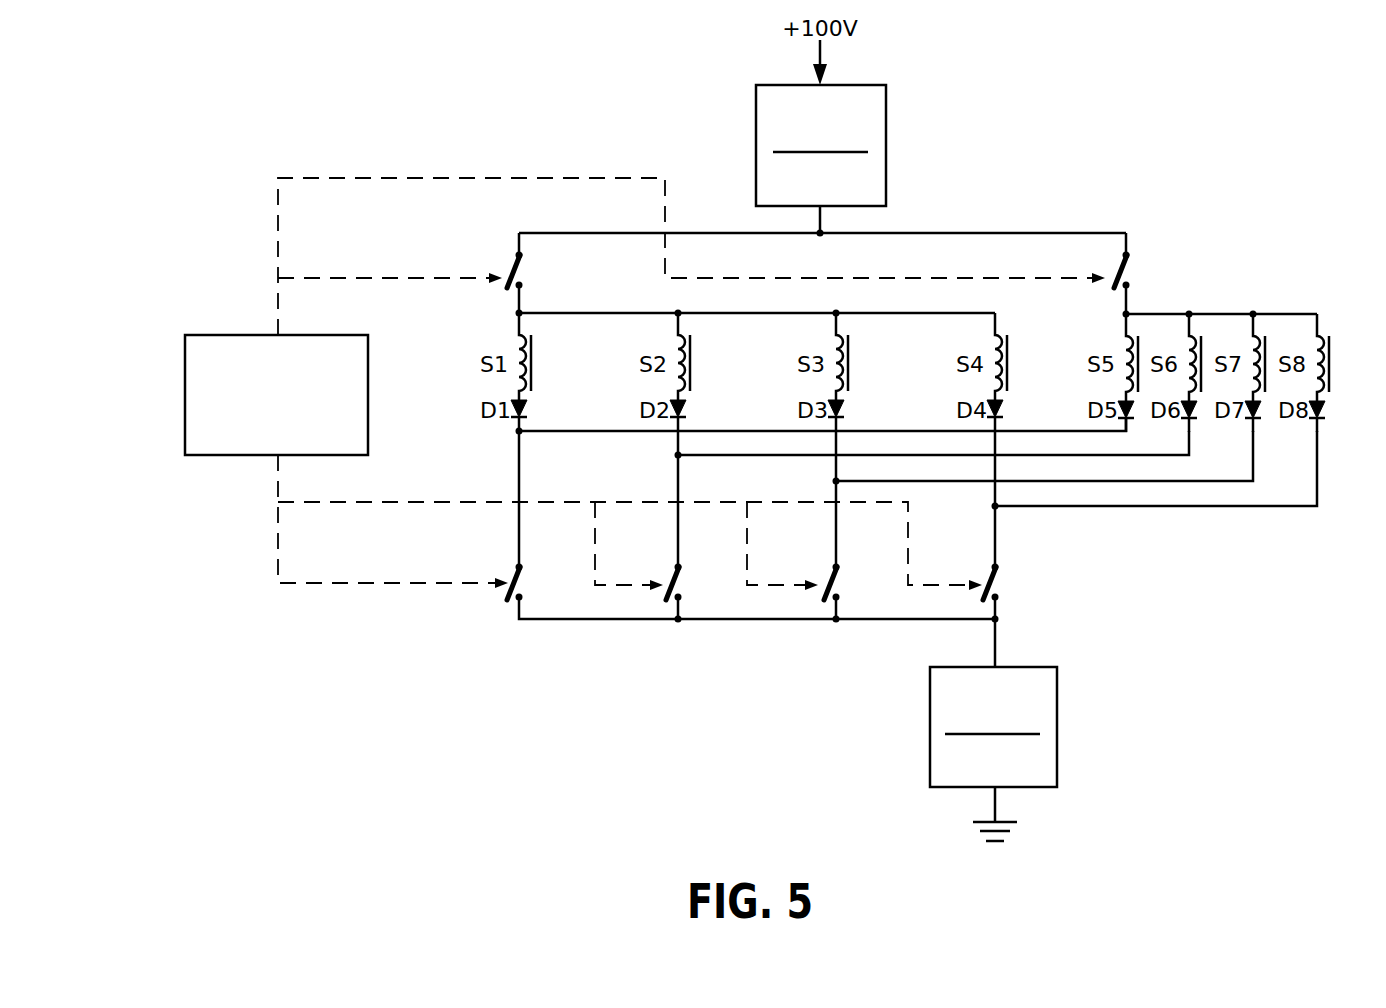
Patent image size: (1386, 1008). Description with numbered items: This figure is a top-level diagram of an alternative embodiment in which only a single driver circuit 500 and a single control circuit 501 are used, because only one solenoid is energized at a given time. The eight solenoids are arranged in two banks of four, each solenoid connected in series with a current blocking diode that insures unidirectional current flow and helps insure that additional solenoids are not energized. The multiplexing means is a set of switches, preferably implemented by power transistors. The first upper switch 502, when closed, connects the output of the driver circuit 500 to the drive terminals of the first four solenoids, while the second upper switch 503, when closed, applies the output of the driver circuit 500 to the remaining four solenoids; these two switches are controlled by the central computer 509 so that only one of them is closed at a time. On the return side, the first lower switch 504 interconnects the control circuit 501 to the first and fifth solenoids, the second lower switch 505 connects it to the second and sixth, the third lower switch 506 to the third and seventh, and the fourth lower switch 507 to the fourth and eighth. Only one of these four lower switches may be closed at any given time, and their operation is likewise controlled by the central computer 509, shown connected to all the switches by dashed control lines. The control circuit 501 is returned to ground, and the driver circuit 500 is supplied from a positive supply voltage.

The driver circuit 500 is at (886, 100).
The control circuit 501 is at (1058, 680).
The switch SWA 502 is at (510, 268).
The switch SWB 503 is at (1114, 272).
The switch SWC 504 is at (512, 578).
The switch SWD 505 is at (672, 578).
The switch SWE 506 is at (829, 578).
The switch SWF 507 is at (988, 578).
The central computer 509 is at (232, 335).